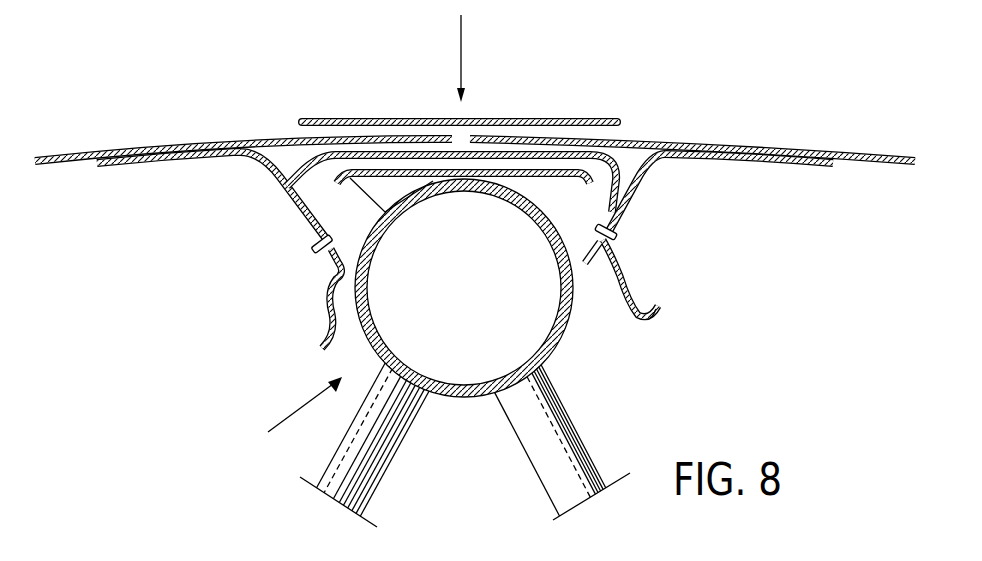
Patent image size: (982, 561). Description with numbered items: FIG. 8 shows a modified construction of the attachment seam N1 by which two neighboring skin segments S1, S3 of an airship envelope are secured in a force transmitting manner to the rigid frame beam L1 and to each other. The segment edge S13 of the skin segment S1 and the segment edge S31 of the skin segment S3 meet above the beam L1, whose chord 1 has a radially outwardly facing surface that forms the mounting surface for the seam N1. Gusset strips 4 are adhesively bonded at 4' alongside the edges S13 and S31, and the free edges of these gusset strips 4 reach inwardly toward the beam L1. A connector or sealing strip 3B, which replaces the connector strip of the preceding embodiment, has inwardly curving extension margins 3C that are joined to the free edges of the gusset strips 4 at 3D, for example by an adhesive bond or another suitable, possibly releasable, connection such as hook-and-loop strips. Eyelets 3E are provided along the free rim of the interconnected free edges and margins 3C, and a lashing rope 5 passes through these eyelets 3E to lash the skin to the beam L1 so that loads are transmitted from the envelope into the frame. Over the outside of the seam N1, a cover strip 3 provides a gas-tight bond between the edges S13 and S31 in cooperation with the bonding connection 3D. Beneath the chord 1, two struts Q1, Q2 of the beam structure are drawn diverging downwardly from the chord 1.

The chord 1 is at (388, 215).
The cover strip 3 is at (330, 118).
The connector or sealing strip 3B is at (583, 152).
The inwardly curving extension margins 3C is at (315, 208).
The connection 3D is at (313, 247).
The eyelets 3E is at (323, 267).
The gusset strips 4 is at (464, 196).
The adhesive bond 4' is at (465, 192).
The lashing rope 5 is at (650, 317).
The skin segment S1 is at (866, 152).
The skin segment S3 is at (67, 155).
The segment edge S31 is at (422, 137).
The segment edge S13 is at (513, 138).
The attachment seam N1 is at (474, 55).
The beam L1 is at (292, 415).
The first leg Q1 is at (357, 487).
The second leg Q2 is at (543, 478).